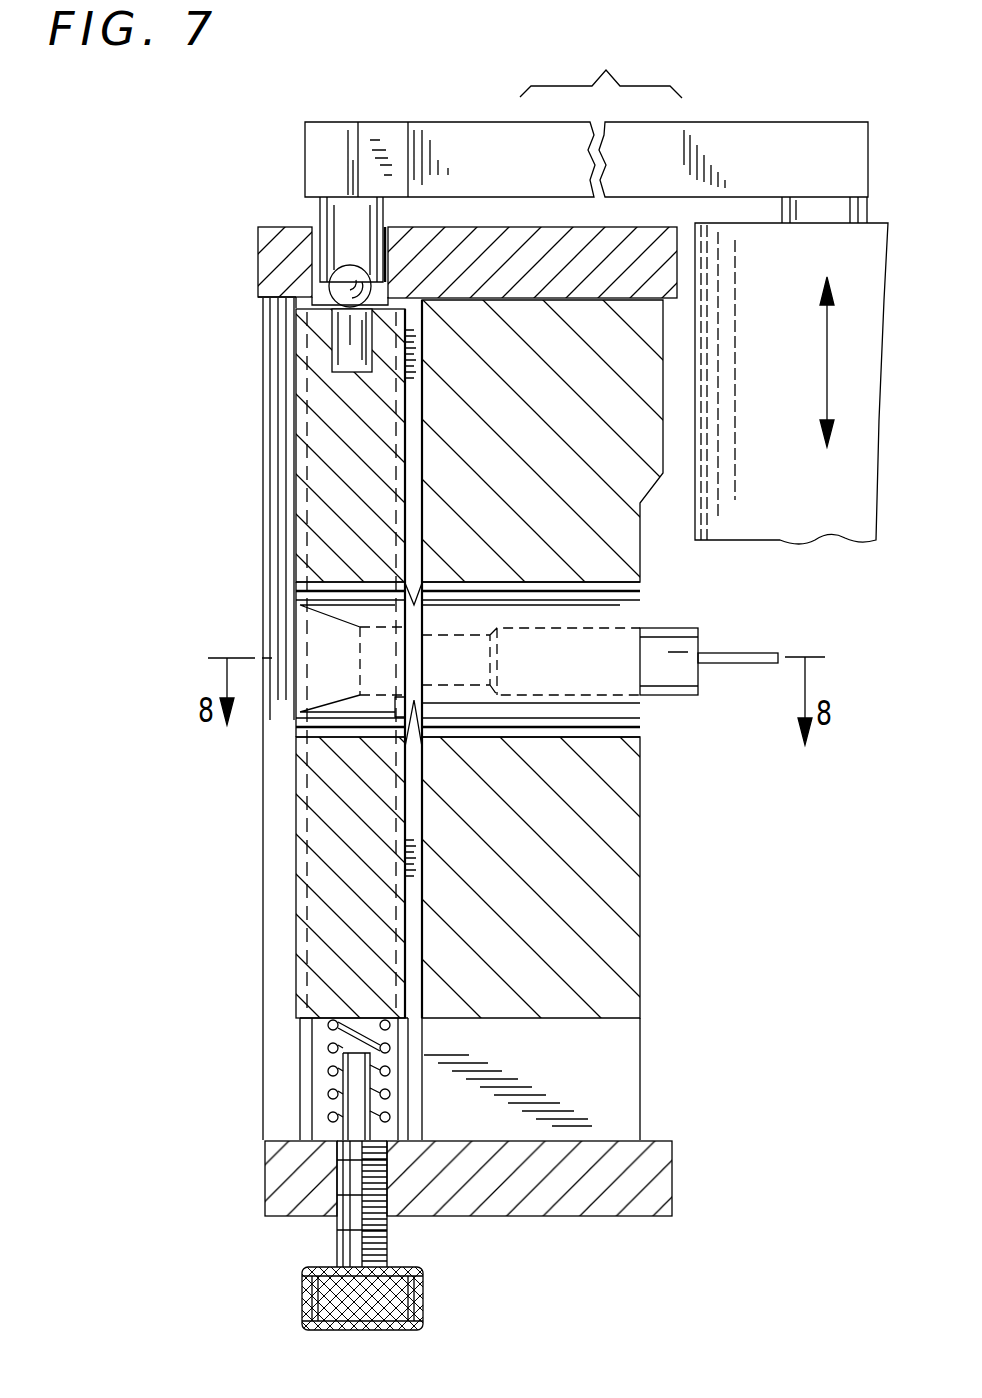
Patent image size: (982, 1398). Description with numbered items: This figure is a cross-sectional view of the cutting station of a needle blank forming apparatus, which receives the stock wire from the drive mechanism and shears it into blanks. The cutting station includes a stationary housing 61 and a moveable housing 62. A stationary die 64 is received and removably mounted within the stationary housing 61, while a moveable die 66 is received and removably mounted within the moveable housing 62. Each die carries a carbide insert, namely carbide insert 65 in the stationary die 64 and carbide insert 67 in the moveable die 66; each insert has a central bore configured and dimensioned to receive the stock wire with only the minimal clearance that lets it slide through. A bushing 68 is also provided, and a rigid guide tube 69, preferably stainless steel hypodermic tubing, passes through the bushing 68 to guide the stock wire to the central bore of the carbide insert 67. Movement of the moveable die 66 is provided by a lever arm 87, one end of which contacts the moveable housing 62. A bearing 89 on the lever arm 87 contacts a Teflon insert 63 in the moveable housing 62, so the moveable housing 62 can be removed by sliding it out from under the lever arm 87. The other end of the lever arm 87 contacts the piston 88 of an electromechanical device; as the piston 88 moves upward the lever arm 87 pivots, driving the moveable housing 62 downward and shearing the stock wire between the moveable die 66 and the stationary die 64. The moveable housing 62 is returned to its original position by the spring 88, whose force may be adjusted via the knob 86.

The stationary housing 61 is at (638, 897).
The moveable housing 62 is at (323, 913).
The Teflon insert 63 is at (336, 353).
The stationary die 64 is at (618, 605).
The carbide insert 65 is at (462, 658).
The moveable die 66 is at (296, 597).
The carbide insert 67 is at (330, 690).
The bushing 68 is at (657, 688).
The rigid guide tube 69 is at (742, 652).
The knob 86 is at (302, 1297).
The lever arm 87 is at (550, 179).
The piston 88 is at (806, 383).
The bearing 89 is at (350, 278).